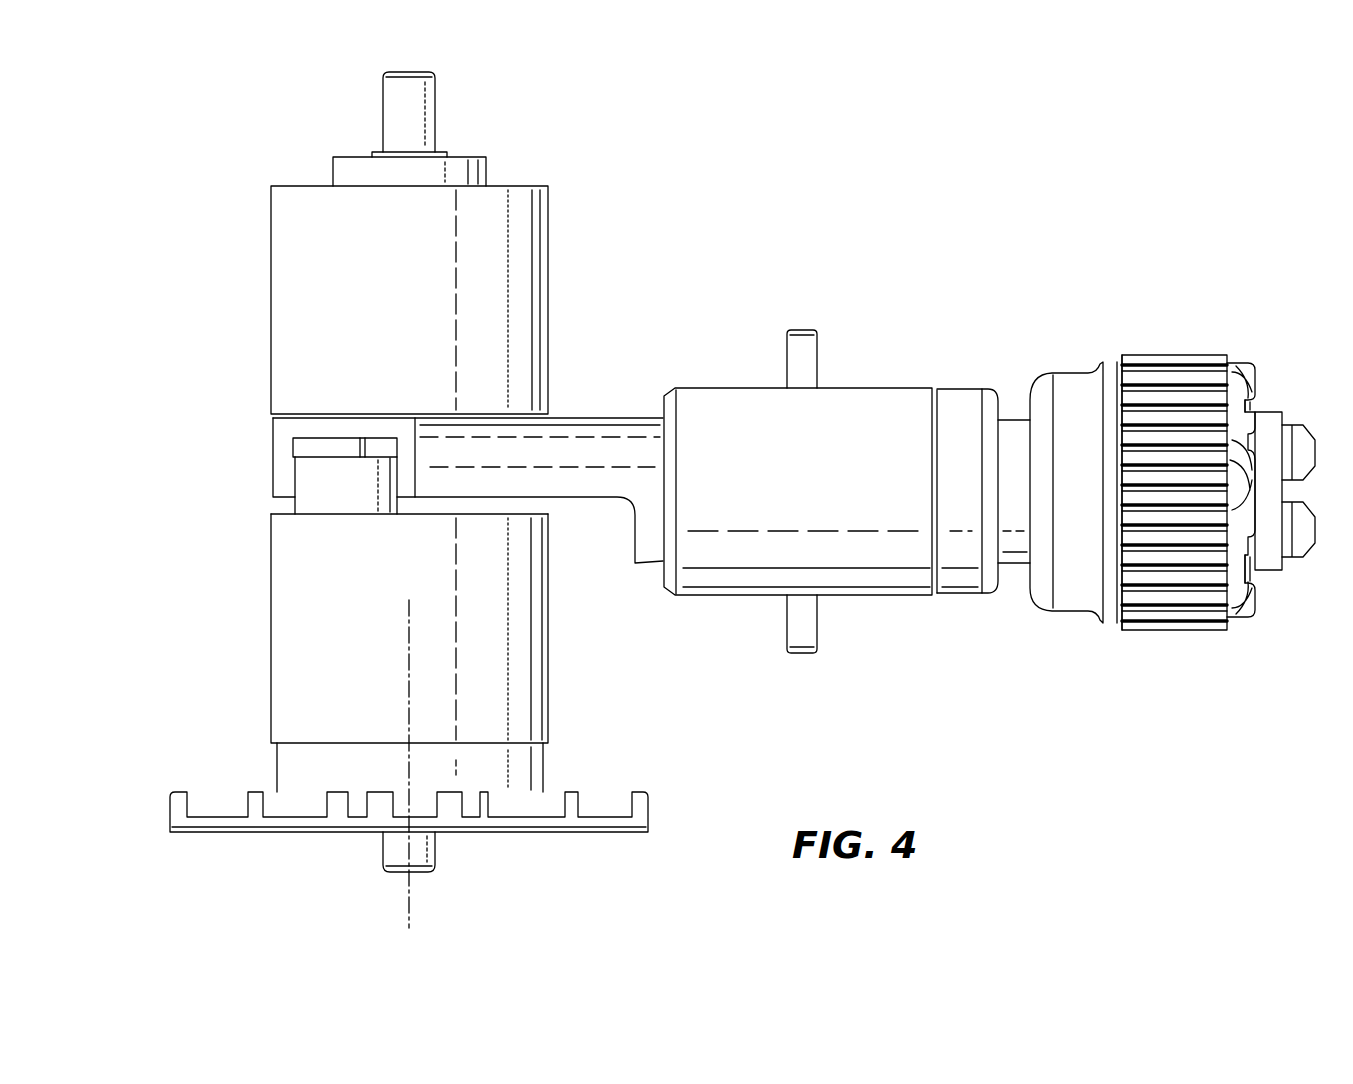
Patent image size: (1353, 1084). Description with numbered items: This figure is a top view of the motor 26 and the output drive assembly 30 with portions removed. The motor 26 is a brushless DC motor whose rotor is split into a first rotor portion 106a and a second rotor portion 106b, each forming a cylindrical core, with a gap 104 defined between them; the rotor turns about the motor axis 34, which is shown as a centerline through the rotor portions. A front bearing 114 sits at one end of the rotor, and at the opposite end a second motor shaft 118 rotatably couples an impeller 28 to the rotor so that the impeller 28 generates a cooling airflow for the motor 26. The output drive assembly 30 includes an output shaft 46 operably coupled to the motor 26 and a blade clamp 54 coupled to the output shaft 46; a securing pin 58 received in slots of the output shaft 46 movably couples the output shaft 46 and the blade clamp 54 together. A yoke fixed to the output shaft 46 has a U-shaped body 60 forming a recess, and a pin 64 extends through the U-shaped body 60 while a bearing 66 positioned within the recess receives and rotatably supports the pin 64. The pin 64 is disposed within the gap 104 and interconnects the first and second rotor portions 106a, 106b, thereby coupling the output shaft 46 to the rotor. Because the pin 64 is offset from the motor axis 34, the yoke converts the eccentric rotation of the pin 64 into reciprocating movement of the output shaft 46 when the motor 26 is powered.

The motor 26 is at (165, 260).
The impeller 28 is at (548, 827).
The output drive assembly 30 is at (933, 622).
The motor axis 34 is at (400, 893).
The output shaft 46 is at (598, 442).
The blade clamp 54 is at (988, 346).
The securing pin 58 is at (808, 350).
The U-shaped body 60 is at (280, 430).
The pin 64 is at (330, 448).
The bearing 66 is at (323, 494).
The gap 104 is at (435, 508).
The first rotor portion 106a is at (308, 225).
The second rotor portion 106b is at (308, 686).
The front bearing 114 is at (350, 157).
The second motor shaft 118 is at (435, 838).